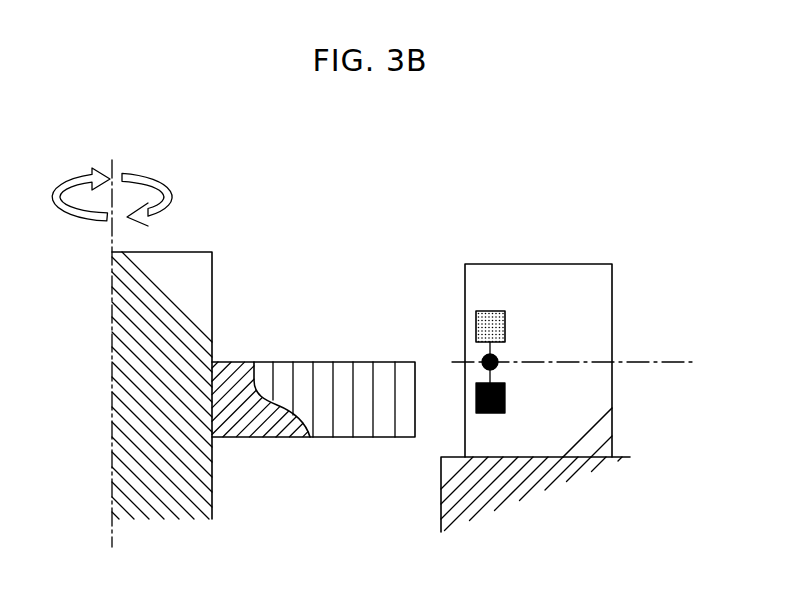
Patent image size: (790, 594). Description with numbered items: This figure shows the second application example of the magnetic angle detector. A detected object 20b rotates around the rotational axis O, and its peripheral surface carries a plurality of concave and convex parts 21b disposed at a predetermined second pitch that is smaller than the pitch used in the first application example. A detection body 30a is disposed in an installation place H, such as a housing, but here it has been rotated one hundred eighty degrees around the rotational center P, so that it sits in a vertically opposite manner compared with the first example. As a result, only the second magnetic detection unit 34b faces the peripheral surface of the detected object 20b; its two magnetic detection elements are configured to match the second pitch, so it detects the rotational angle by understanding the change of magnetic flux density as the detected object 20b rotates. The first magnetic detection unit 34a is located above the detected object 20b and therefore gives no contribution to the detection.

The rotational axis O is at (112, 171).
The detected object 20b is at (231, 377).
The concave and convex parts 21b is at (347, 377).
The detection body 30a is at (540, 243).
The first magnetic detection unit 34a is at (490, 311).
The second magnetic detection unit 34b is at (476, 393).
The rotational center P is at (660, 362).
The installation place H is at (452, 457).